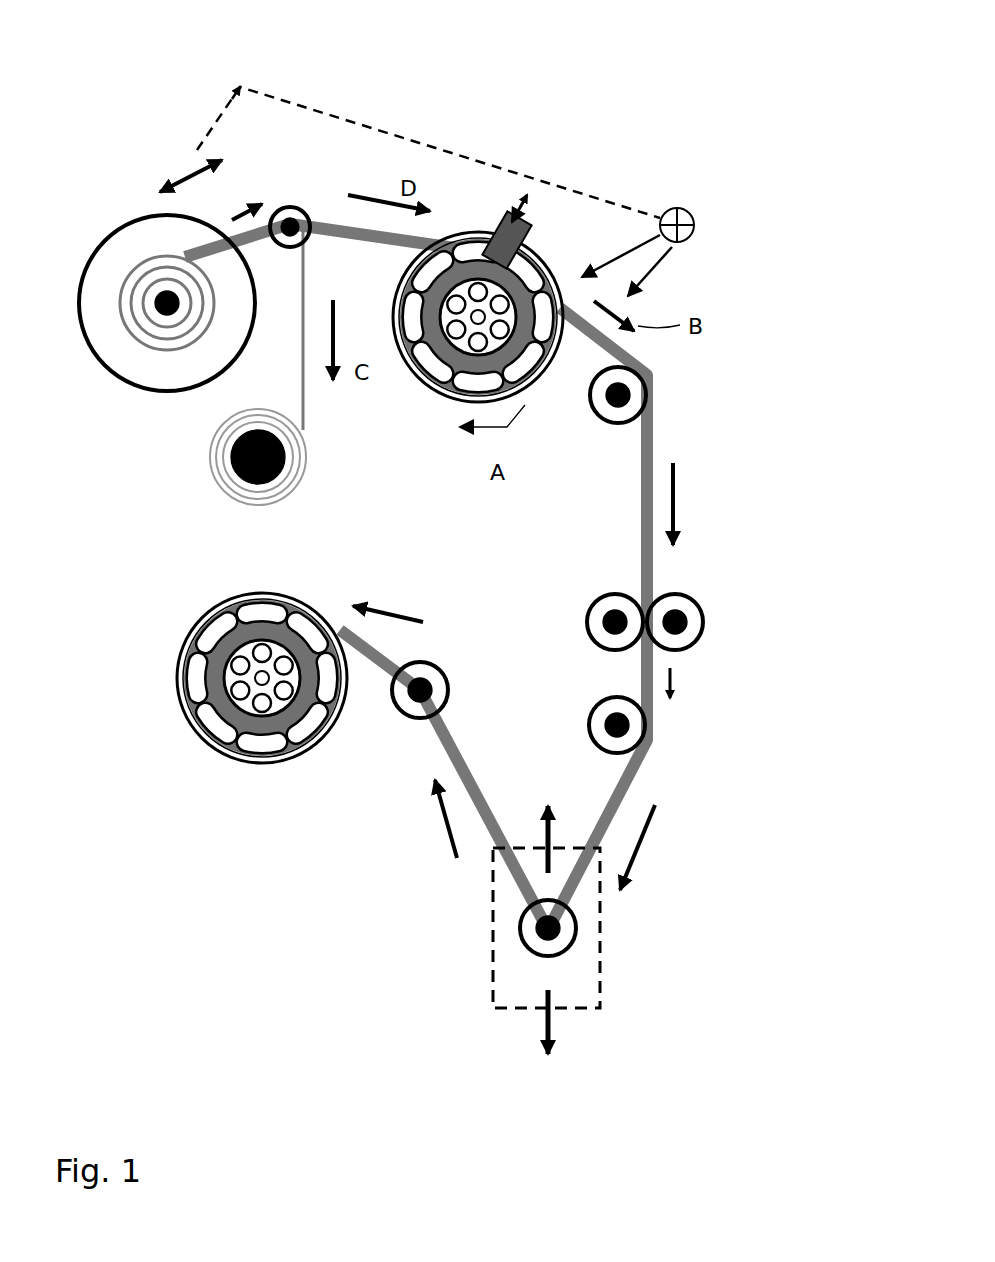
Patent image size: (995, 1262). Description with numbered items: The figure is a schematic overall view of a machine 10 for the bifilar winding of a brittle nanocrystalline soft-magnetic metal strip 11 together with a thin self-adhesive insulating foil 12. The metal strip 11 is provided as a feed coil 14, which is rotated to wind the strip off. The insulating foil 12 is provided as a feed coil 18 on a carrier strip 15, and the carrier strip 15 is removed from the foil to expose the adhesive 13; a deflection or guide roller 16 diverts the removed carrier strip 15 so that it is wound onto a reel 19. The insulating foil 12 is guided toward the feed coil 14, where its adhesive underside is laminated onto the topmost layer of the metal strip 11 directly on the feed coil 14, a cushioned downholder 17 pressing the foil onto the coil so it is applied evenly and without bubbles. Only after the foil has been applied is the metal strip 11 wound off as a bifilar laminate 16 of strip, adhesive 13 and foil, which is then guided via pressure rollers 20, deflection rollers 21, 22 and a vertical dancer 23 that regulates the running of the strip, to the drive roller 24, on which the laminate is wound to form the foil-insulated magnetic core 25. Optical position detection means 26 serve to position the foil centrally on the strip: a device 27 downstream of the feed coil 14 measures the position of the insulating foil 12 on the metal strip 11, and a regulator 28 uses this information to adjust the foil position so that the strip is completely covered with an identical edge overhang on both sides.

The machine 10 is at (95, 47).
The nanocrystalline soft-magnetic metal strip 11 is at (567, 372).
The insulating foil 12 is at (352, 224).
The adhesive 13 is at (375, 238).
The feed coil 14 is at (433, 396).
The carrier strip 15 is at (305, 423).
The guide roller 16 is at (285, 246).
The cushioned downholder 17 is at (530, 245).
The feed coil 18 is at (140, 347).
The reel 19 is at (245, 485).
The pressure rollers 20 is at (702, 602).
The deflection rollers 21 is at (647, 745).
The deflection rollers 22 is at (610, 426).
The vertical dancer 23 is at (575, 946).
The drive roller 24 is at (302, 754).
The magnetic core 25 is at (212, 748).
The optical position detection means 26 is at (486, 132).
The device 27 is at (695, 216).
The regulator 28 is at (200, 160).